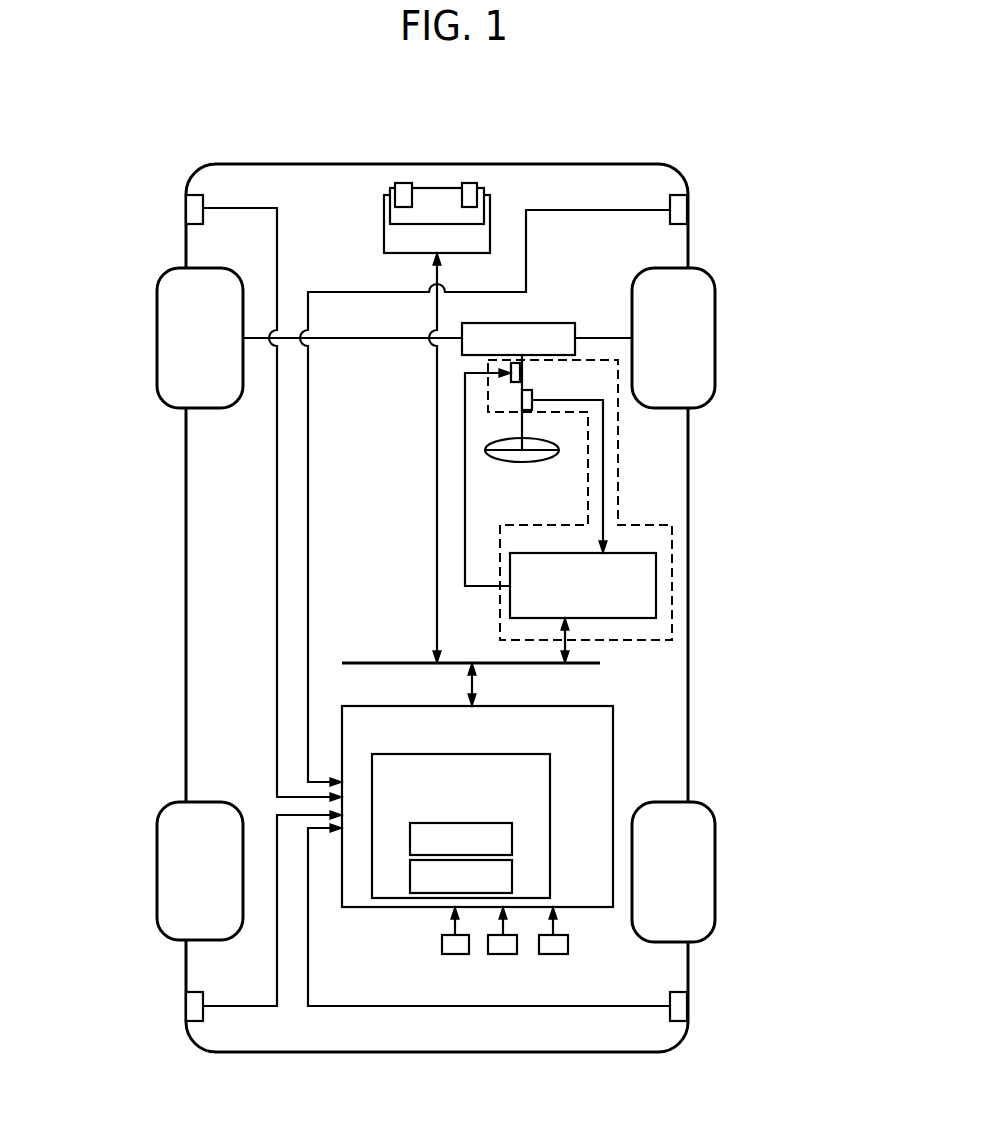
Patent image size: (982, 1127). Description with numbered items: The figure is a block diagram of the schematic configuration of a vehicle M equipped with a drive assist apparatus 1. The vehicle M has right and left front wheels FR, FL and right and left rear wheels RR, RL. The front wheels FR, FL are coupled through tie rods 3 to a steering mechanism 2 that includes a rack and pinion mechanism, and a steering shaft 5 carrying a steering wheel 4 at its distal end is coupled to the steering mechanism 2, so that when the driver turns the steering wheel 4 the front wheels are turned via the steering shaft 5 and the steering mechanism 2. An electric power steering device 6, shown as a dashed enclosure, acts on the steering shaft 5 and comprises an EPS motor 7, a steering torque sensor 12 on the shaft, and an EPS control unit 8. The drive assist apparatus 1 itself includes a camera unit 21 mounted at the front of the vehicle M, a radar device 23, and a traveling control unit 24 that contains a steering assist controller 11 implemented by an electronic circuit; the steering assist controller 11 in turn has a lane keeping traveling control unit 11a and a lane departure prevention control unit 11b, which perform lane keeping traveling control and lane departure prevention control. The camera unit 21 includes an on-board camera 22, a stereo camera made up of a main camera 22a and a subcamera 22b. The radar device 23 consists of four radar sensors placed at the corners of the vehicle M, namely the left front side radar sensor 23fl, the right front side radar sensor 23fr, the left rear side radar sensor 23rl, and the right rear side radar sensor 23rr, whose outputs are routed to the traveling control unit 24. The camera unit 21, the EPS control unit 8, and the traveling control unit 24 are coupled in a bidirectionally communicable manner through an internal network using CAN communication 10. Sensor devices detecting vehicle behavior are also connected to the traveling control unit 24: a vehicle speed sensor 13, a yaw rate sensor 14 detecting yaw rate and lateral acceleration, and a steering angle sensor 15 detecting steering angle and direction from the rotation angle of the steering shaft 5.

The vehicle M is at (612, 142).
The drive assist apparatus 1 is at (411, 525).
The steering mechanism 2 is at (560, 323).
The tie rods 3 is at (358, 340).
The steering wheel 4 is at (530, 462).
The steering shaft 5 is at (518, 427).
The electric power steering (EPS) device 6 is at (535, 517).
The EPS motor 7 is at (521, 372).
The EPS control unit (EPS_ECU) 8 is at (628, 618).
The controller area network (CAN) communication 10 is at (357, 660).
The steering assist controller 11 is at (494, 826).
The lane keeping traveling control unit (ALK_ECU) 11a is at (512, 838).
The lane departure prevention control unit (LDP_ECU) 11b is at (512, 875).
The steering torque sensor 12 is at (522, 400).
The vehicle speed sensor 13 is at (455, 957).
The yaw rate sensor 14 is at (503, 957).
The steering angle sensor 15 is at (553, 957).
The camera unit 21 is at (450, 180).
The on-board camera 22 is at (390, 207).
The main camera 22a is at (469, 183).
The subcamera 22b is at (404, 183).
The radar device 23 is at (438, 599).
The left front side radar sensor 23fl is at (186, 205).
The right front side radar sensor 23fr is at (687, 205).
The left rear side radar sensor 23rl is at (186, 1008).
The right rear side radar sensor 23rr is at (687, 1008).
The traveling control unit 24 is at (511, 785).
The left front wheel FL is at (157, 328).
The right front wheel FR is at (715, 338).
The left rear wheel RL is at (157, 858).
The right rear wheel RR is at (715, 870).